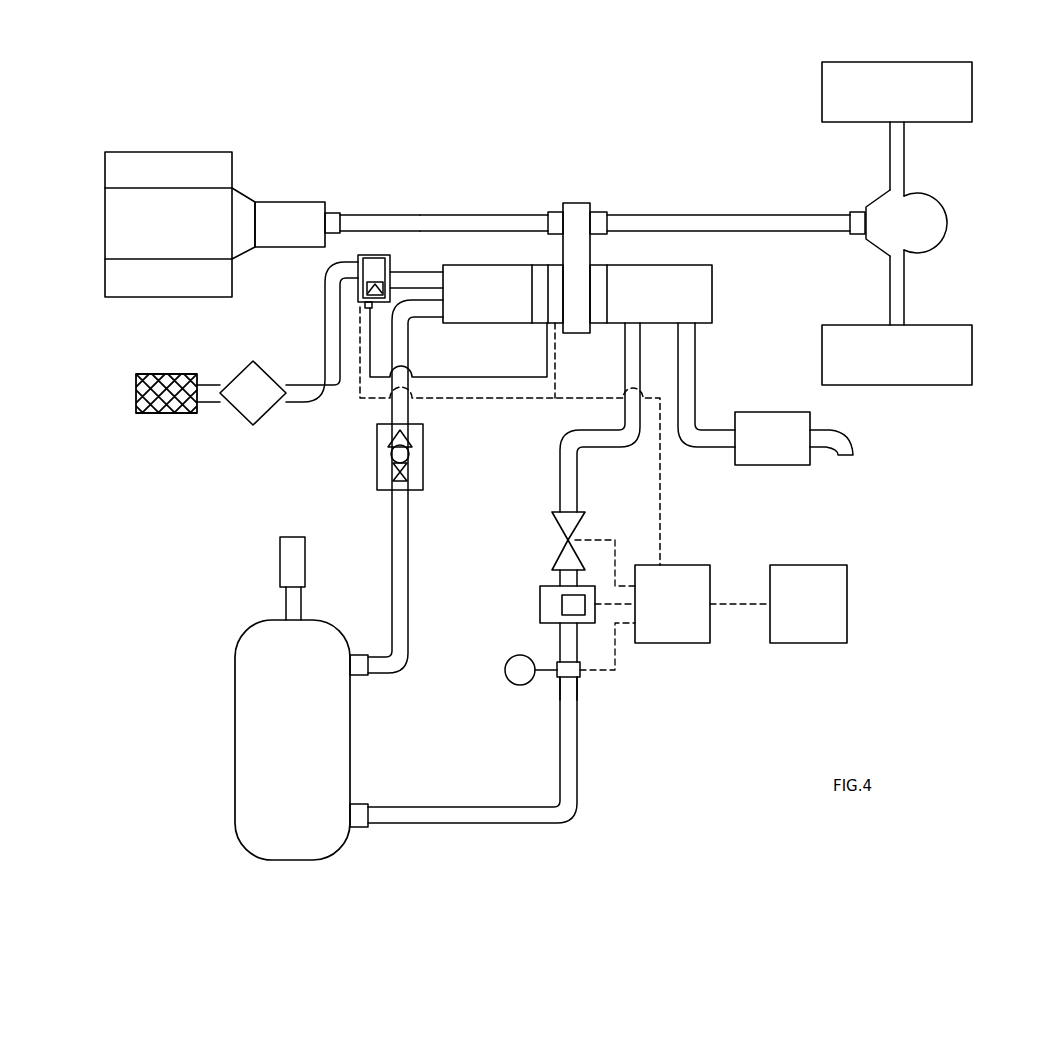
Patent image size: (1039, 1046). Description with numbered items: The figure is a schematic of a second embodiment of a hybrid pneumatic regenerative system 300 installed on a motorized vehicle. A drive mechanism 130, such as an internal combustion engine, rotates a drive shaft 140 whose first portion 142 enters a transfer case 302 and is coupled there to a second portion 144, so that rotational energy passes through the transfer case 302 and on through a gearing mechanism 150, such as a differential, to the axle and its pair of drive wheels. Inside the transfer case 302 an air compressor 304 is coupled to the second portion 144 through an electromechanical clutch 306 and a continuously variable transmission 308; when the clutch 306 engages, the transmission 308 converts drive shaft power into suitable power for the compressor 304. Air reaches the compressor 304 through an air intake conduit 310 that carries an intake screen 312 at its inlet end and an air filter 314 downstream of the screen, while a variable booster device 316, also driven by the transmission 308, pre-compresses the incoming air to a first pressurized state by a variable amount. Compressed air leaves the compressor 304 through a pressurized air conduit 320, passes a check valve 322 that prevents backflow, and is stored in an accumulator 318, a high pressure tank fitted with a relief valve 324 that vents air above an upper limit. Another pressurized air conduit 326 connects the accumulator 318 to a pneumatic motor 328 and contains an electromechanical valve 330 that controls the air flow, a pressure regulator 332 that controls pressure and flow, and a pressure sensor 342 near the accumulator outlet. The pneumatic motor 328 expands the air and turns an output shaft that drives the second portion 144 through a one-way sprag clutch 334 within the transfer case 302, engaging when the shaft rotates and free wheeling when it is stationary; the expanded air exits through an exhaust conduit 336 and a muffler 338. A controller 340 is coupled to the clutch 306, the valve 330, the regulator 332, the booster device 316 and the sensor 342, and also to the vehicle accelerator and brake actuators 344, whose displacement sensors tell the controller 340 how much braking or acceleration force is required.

The hybrid pneumatic regenerative system 300 is at (496, 136).
The drive mechanism 130 is at (150, 152).
The drive shaft 140 is at (373, 223).
The first portion of the drive shaft 142 is at (415, 213).
The second portion of the drive shaft 144 is at (645, 213).
The transfer case 302 is at (577, 202).
The air compressor 304 is at (480, 325).
The electromechanical clutch 306 is at (555, 263).
The continuously variable transmission 308 is at (538, 325).
The air intake conduit 310 is at (323, 353).
The intake screen 312 is at (165, 413).
The air filter 314 is at (270, 412).
The variable booster device 316 is at (358, 260).
The accumulator 318 is at (235, 742).
The pressurized air conduit 320 is at (410, 590).
The check valve 322 is at (383, 437).
The relief valve 324 is at (280, 562).
The pressurized air conduit 326 is at (460, 827).
The pneumatic motor 328 is at (713, 295).
The electromechanical valve 330 is at (562, 527).
The pressure regulator 332 is at (540, 603).
The sprag clutch 334 is at (597, 330).
The exhaust conduit 336 is at (697, 382).
The muffler 338 is at (772, 465).
The controller 340 is at (670, 643).
The pressure sensor 342 is at (505, 668).
The accelerator and brake actuators 344 is at (808, 643).
The gearing mechanism 150 is at (903, 230).